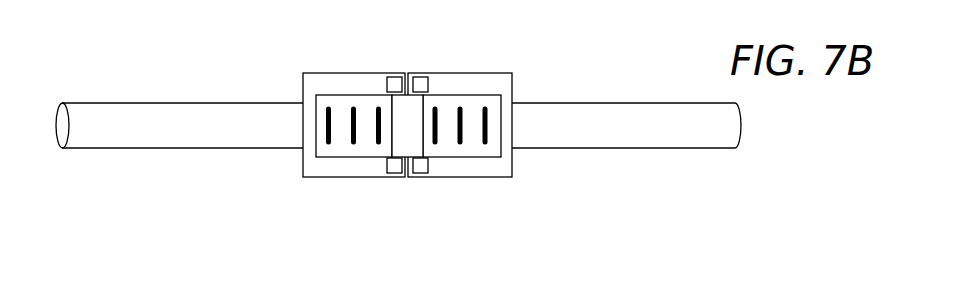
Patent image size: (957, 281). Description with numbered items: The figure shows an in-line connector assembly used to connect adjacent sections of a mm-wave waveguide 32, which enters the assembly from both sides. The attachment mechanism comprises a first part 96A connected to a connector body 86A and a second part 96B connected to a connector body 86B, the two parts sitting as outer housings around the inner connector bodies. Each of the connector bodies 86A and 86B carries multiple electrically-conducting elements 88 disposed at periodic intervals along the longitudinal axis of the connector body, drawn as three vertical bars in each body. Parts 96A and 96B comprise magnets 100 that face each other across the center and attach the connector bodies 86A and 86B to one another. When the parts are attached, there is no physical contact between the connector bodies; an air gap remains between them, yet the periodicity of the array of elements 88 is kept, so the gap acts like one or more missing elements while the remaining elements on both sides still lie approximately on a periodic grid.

The mm-wave waveguide 32 is at (190, 102).
The connector body 86A is at (320, 94).
The connector body 86B is at (485, 94).
The electrically-conducting elements 88 is at (435, 144).
The first part 96A is at (312, 178).
The second part 96B is at (512, 162).
The magnets 100 is at (418, 77).